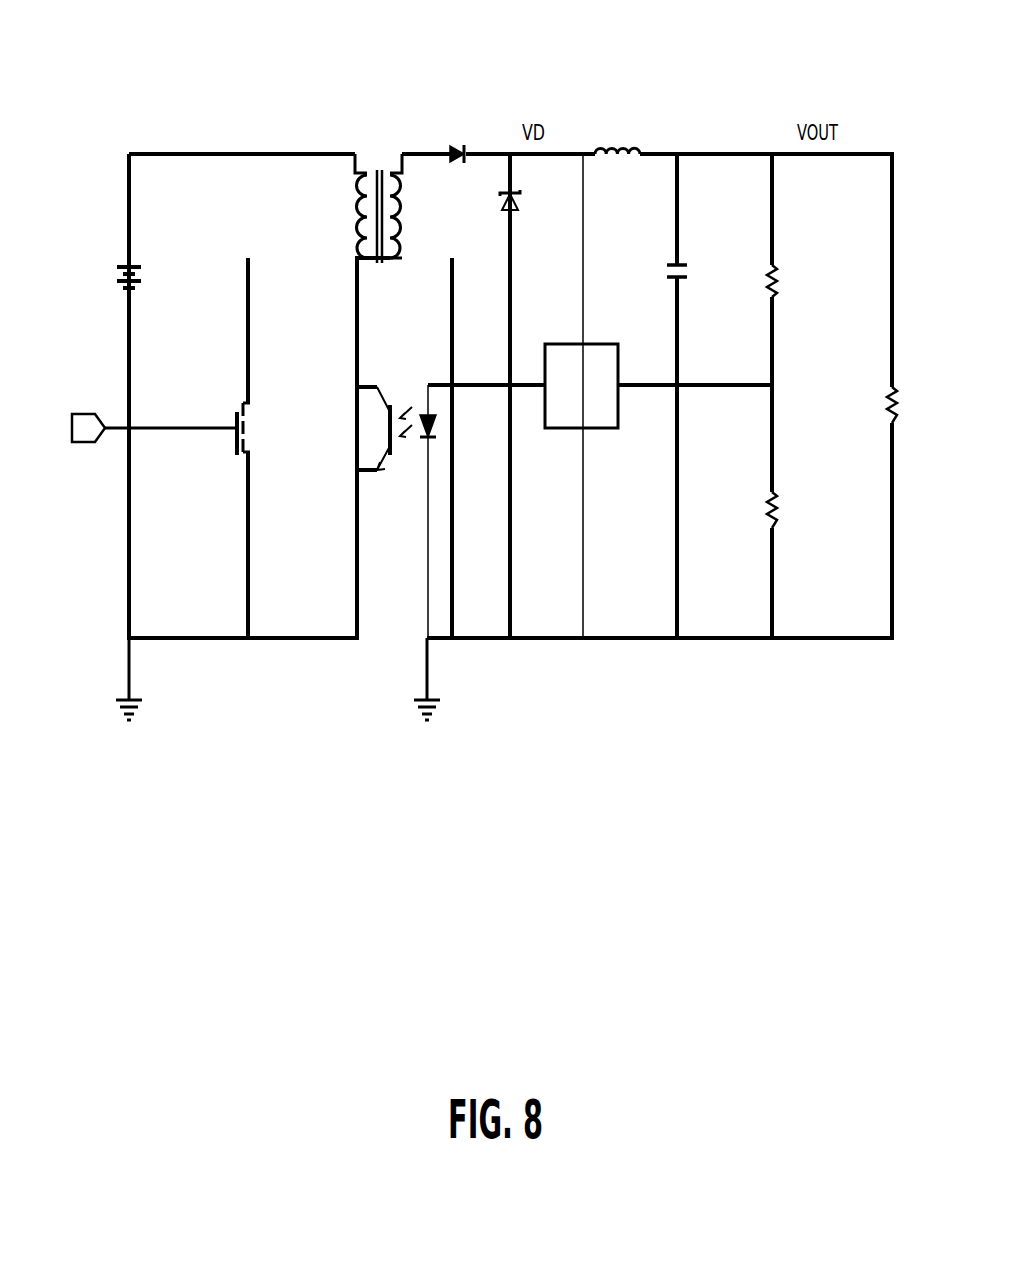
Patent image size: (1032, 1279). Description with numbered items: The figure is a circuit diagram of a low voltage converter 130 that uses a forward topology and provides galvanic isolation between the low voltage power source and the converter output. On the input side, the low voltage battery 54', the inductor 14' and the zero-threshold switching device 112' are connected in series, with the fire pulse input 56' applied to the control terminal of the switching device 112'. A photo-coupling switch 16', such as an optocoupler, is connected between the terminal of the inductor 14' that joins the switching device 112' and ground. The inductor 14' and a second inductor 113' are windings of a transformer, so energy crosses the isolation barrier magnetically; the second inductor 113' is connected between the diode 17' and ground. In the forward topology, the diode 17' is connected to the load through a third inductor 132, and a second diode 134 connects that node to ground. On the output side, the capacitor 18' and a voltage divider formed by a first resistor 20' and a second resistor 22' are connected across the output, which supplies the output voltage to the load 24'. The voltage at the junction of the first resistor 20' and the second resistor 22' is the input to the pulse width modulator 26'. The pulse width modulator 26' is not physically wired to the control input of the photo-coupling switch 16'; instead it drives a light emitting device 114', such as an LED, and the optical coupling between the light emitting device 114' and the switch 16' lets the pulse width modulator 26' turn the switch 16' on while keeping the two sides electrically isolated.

The low voltage power source 54' is at (98, 163).
The zero-threshold switching device 112' is at (177, 331).
The fire pulse input 56' is at (75, 523).
The inductor 14' is at (306, 206).
The second inductor 113' is at (382, 143).
The diode 17' is at (501, 82).
The third inductor 132 is at (637, 128).
The second diode 134 is at (520, 215).
The capacitor 18' is at (652, 228).
The first resistor 20' is at (783, 242).
The second resistor 22' is at (797, 544).
The load 24' is at (886, 375).
The pulse width modulator 26' is at (598, 433).
The photo-coupling switch 16' is at (372, 492).
The light emitting device 114' is at (462, 493).
The voltage converter 130 is at (195, 851).